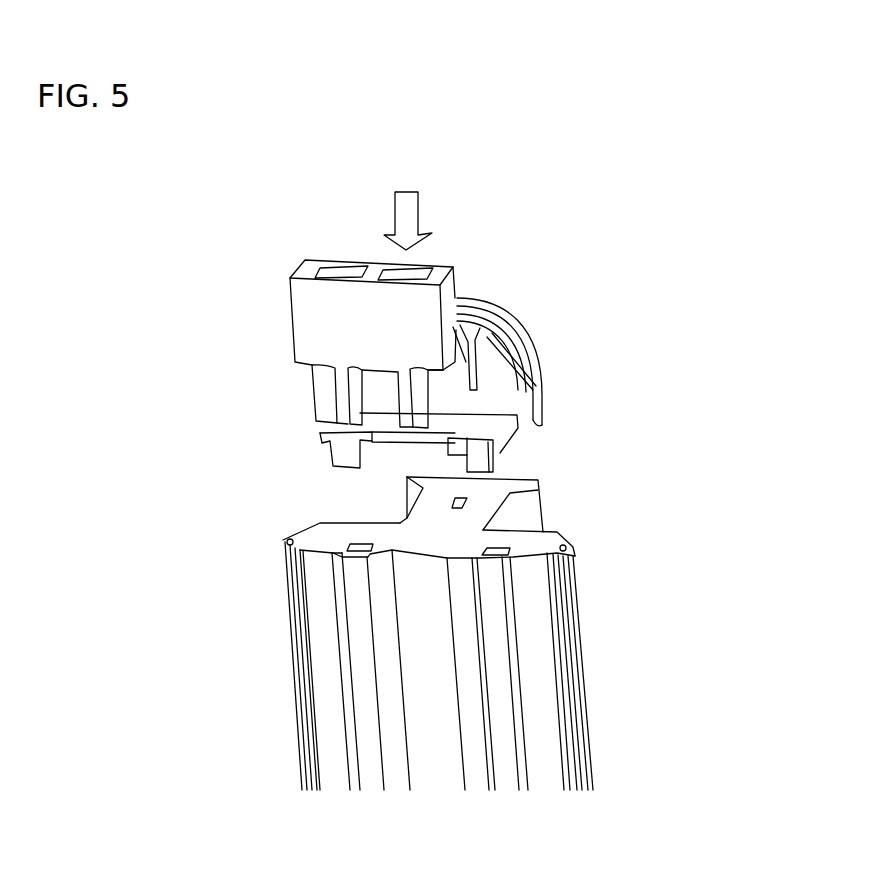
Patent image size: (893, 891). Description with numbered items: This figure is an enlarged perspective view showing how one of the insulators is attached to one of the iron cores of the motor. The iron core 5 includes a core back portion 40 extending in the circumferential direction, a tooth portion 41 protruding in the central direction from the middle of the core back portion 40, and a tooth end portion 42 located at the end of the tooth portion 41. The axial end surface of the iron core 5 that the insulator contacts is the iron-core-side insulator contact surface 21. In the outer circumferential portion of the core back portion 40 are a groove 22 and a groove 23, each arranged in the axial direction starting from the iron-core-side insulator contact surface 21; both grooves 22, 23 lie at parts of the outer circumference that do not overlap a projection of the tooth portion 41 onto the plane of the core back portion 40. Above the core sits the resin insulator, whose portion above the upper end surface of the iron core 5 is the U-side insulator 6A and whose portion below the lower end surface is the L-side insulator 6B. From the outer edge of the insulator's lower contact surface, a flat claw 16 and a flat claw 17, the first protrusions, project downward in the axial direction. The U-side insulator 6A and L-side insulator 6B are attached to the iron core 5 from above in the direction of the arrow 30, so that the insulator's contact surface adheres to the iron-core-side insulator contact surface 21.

The iron core 5 is at (432, 626).
The U-side insulator 6A is at (513, 377).
The L-side insulator 6B is at (491, 353).
The flat claw 16 is at (342, 455).
The flat claw 17 is at (480, 457).
The iron-core-side insulator contact surface 21 is at (433, 502).
The groove 22 is at (353, 580).
The groove 23 is at (487, 585).
The arrow 30 is at (408, 210).
The core back portion 40 is at (582, 642).
The tooth portion 41 is at (503, 518).
The tooth end portion 42 is at (538, 477).